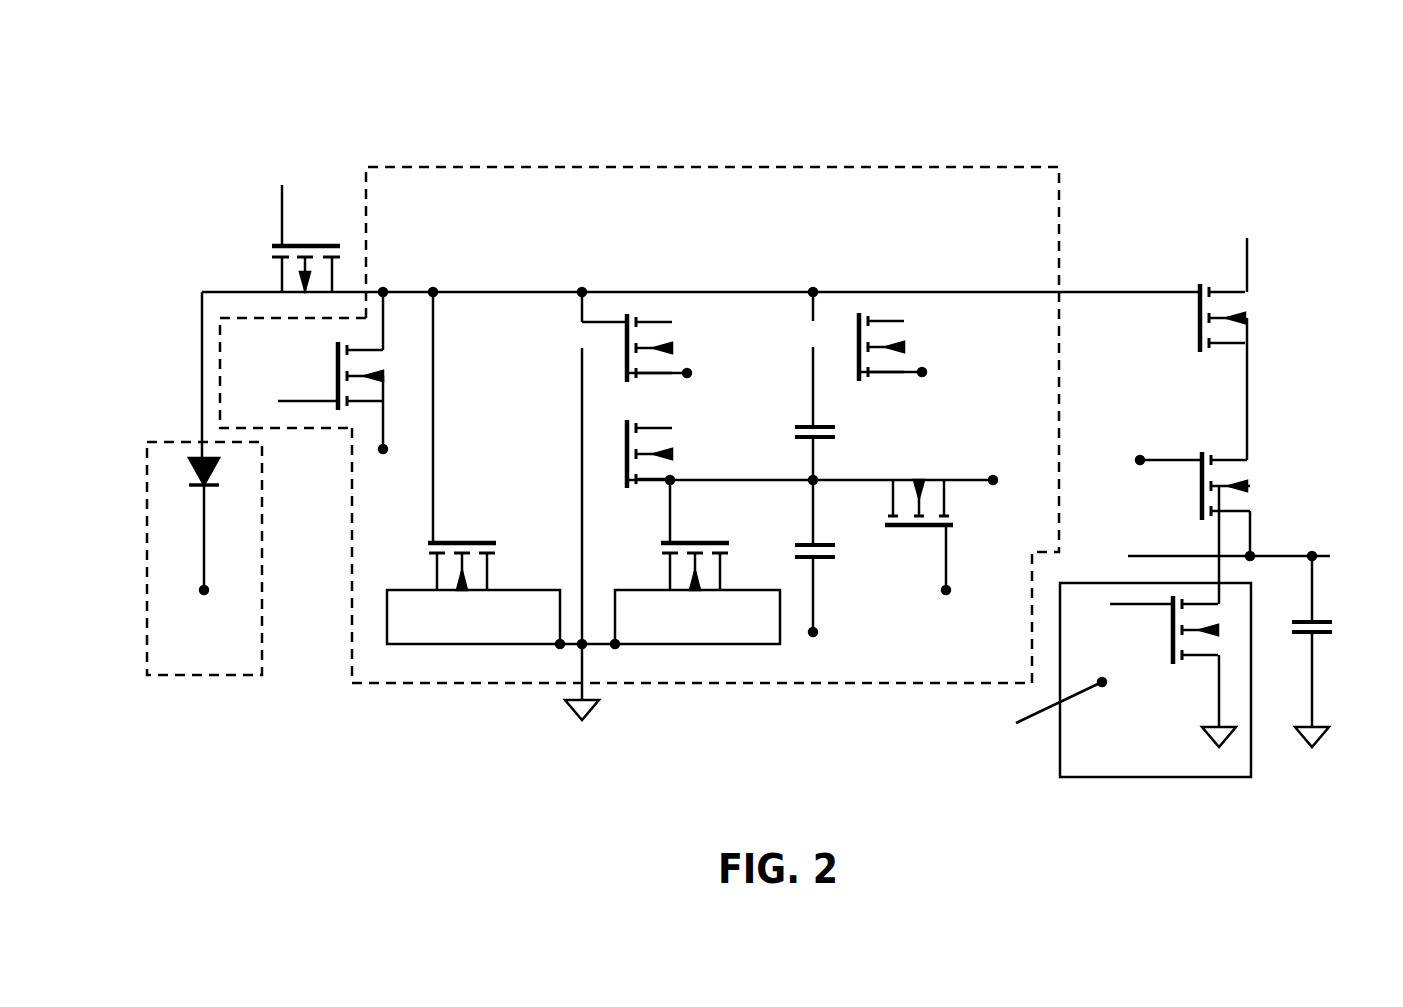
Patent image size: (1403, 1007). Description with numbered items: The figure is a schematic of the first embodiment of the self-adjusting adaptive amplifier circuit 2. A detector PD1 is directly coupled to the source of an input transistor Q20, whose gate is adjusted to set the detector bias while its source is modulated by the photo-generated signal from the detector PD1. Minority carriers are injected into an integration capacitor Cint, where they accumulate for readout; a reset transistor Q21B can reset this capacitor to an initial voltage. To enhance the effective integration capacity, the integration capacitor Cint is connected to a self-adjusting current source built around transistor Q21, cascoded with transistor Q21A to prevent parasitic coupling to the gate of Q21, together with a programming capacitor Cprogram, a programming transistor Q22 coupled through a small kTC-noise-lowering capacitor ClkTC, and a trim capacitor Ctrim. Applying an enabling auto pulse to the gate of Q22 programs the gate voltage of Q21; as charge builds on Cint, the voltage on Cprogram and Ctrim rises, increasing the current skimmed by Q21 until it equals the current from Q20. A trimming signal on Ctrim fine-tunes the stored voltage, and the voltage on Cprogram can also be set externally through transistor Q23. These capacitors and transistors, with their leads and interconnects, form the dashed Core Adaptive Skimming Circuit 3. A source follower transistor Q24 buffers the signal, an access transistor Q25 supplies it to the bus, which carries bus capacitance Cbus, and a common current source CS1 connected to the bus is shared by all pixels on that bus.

The amplifier circuit 2 is at (1252, 129).
The Core Adaptive Skimming Circuit (CASC) 3 is at (737, 166).
The input transistor Q20 is at (306, 248).
The reset transistor Q21B is at (303, 370).
The detector PD1 is at (262, 548).
The cascode transistor Q21A is at (640, 335).
The current source transistor Q21 is at (781, 534).
The programming transistor Q22 is at (867, 357).
The external programming transistor Q23 is at (919, 537).
The source follower transistor Q24 is at (1252, 349).
The access transistor Q25 is at (1221, 528).
The common current source CS1 is at (1251, 760).
The integration capacitor Cint is at (473, 466).
The programming capacitor Cprogram is at (697, 560).
The kTC-noise-lowering capacitor ClkTC is at (776, 452).
The trim capacitor Ctrim is at (790, 558).
The bus capacitor Cbus is at (1346, 651).